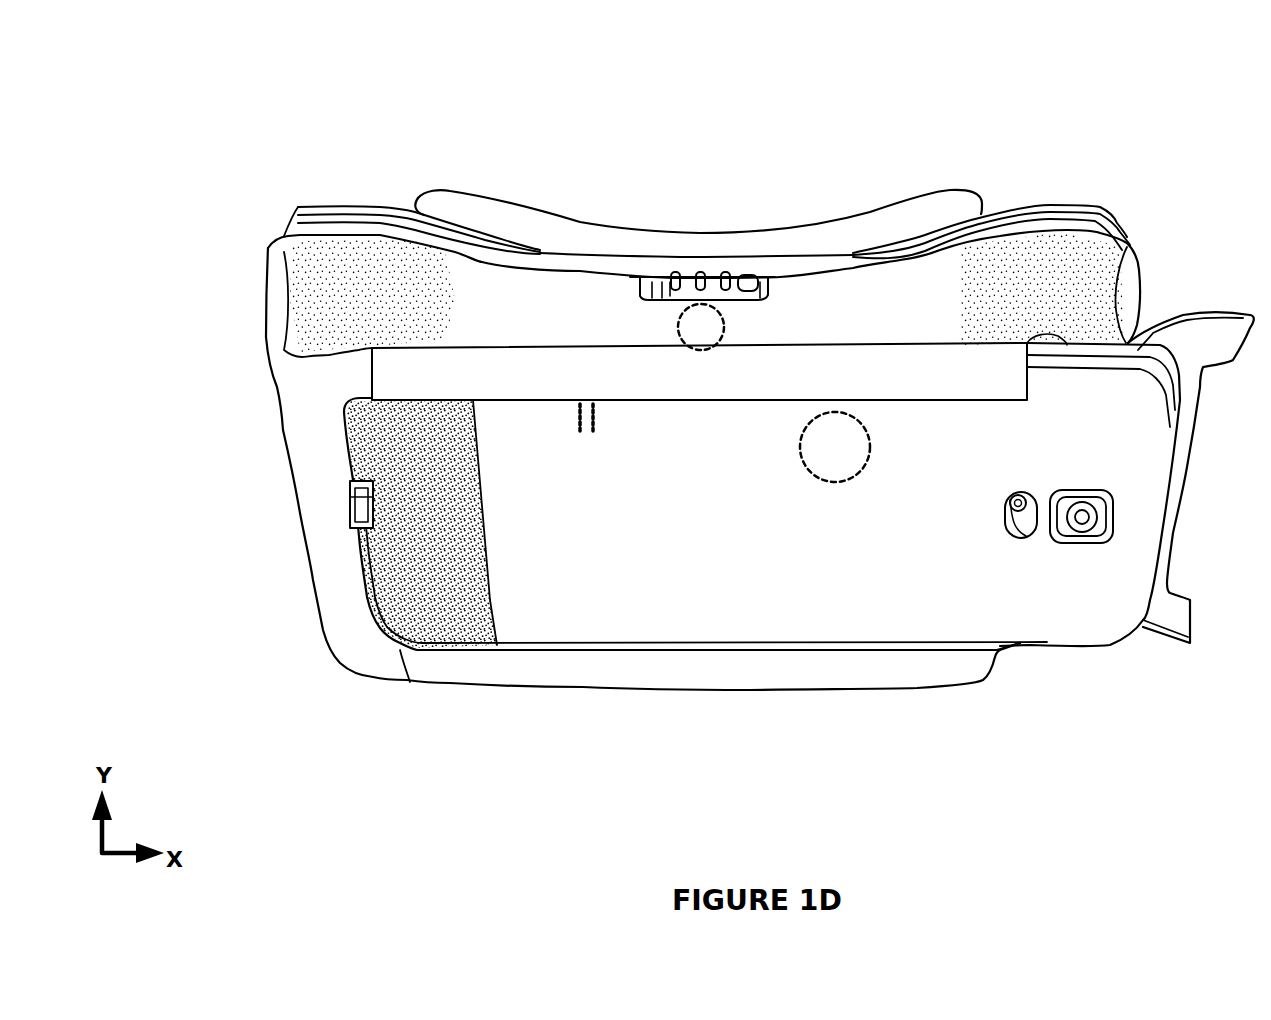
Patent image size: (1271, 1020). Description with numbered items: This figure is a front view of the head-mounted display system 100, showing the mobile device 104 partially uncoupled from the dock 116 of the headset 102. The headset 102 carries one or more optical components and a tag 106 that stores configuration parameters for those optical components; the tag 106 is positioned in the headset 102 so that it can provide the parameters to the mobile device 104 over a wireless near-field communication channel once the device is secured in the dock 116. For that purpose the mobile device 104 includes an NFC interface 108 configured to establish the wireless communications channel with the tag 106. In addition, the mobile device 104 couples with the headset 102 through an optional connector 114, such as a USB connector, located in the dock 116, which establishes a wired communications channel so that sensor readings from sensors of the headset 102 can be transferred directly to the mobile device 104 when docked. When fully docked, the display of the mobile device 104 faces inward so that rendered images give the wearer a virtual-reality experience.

The head-mounted display system 100 is at (114, 91).
The headset 102 is at (266, 247).
The mobile device 104 is at (1065, 600).
The tag 106 is at (678, 331).
The NFC interface 108 is at (866, 453).
The connector 114 is at (357, 497).
The dock 116 is at (434, 627).